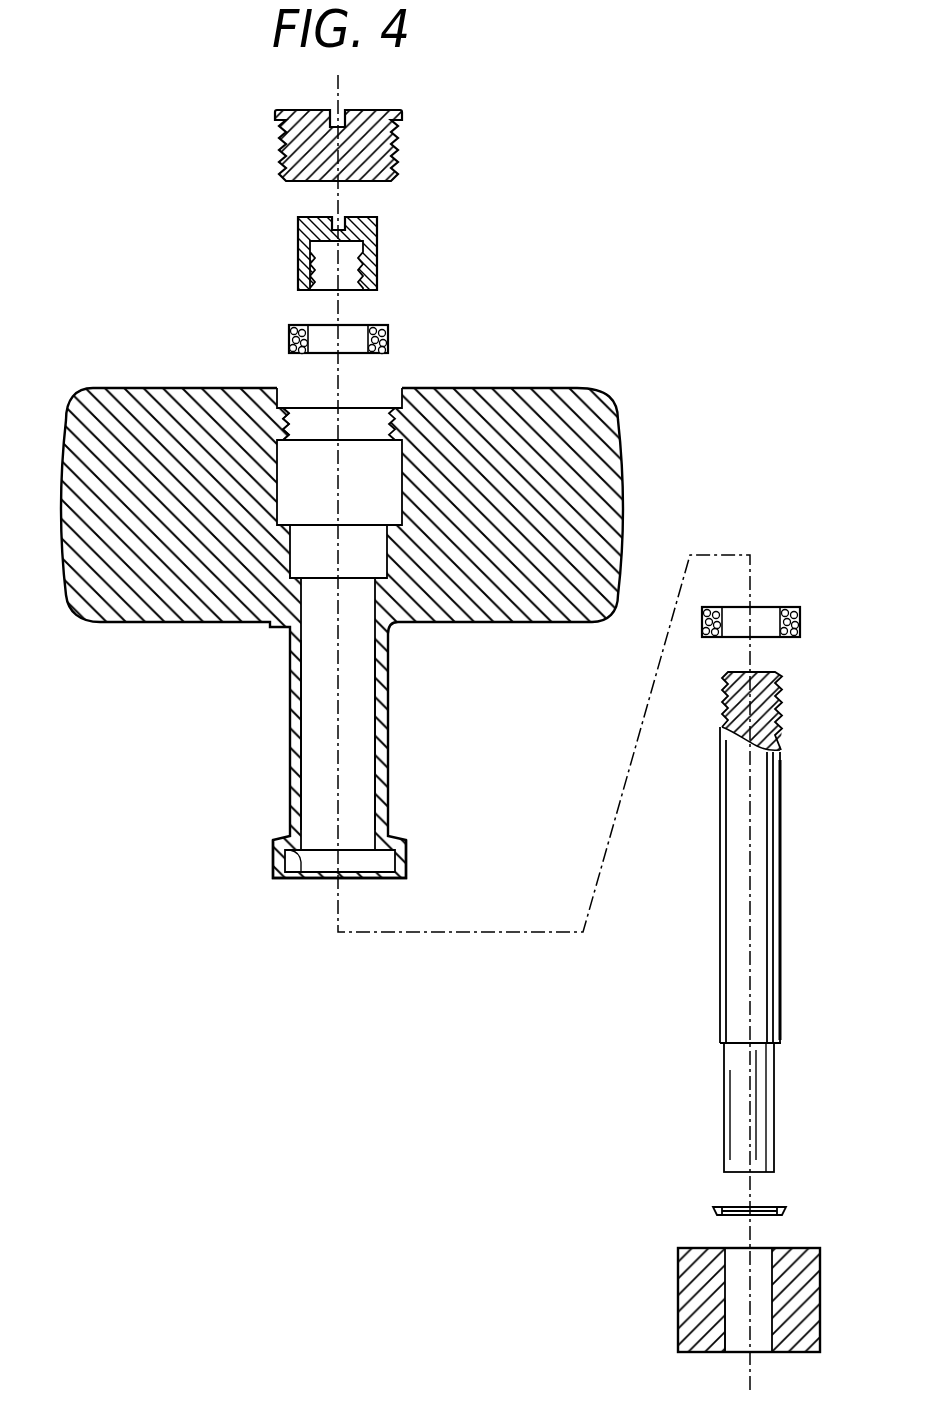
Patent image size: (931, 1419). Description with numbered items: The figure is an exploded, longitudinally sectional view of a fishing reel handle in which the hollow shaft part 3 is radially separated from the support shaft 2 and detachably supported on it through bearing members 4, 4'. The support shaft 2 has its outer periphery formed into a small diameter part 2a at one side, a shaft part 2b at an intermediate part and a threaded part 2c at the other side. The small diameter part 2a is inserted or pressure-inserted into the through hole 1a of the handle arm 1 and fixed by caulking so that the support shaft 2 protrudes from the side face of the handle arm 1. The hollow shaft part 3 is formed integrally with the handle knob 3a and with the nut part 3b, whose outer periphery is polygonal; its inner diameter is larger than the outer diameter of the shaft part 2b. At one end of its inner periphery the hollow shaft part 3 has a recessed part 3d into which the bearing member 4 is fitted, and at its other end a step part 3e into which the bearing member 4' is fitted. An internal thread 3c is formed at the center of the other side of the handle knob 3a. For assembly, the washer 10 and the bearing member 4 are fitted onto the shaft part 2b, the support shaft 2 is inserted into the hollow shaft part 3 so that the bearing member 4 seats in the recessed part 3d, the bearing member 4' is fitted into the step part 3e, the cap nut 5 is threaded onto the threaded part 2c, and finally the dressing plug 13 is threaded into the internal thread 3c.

The handle arm 1 is at (678, 1292).
The through hole 1a is at (731, 1348).
The support shaft 2 is at (782, 896).
The small diameter part 2a is at (770, 1133).
The shaft part 2b is at (772, 821).
The threaded part 2c is at (782, 696).
The hollow shaft part 3 is at (288, 720).
The handle knob 3a is at (568, 392).
The nut part 3b is at (272, 862).
The internal thread 3c is at (286, 418).
The recessed part 3d is at (303, 862).
The step part 3e is at (304, 581).
The bearing member 4 is at (776, 615).
The bearing member 4' is at (371, 341).
The cap nut 5 is at (376, 247).
The washer 10 is at (780, 1207).
The dressing plug 13 is at (398, 148).